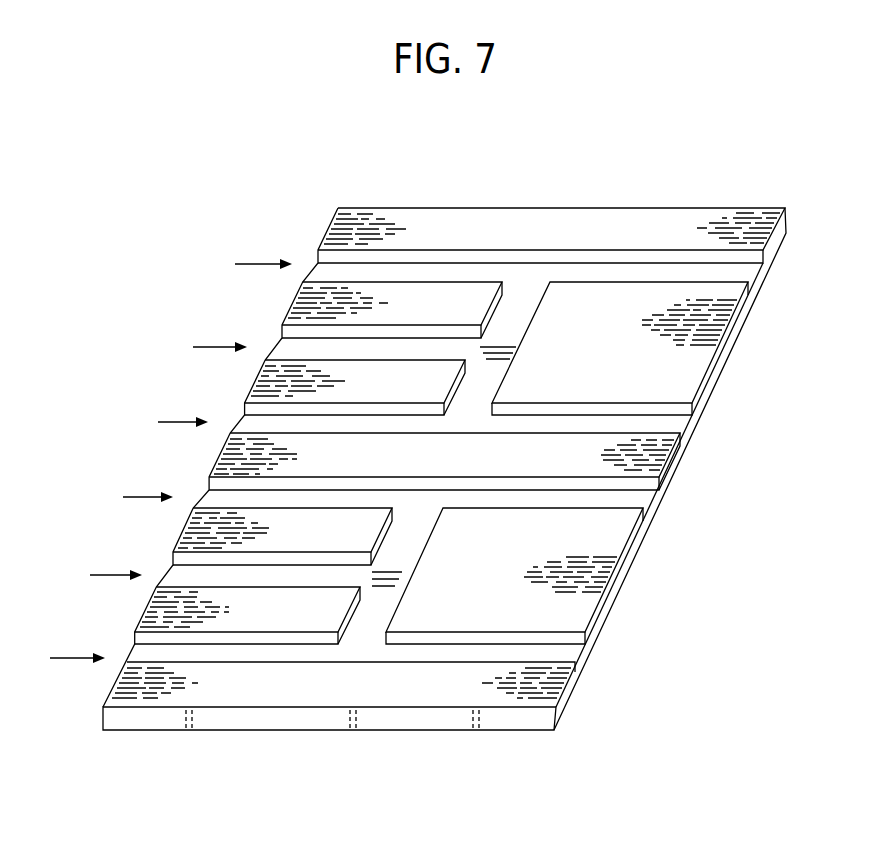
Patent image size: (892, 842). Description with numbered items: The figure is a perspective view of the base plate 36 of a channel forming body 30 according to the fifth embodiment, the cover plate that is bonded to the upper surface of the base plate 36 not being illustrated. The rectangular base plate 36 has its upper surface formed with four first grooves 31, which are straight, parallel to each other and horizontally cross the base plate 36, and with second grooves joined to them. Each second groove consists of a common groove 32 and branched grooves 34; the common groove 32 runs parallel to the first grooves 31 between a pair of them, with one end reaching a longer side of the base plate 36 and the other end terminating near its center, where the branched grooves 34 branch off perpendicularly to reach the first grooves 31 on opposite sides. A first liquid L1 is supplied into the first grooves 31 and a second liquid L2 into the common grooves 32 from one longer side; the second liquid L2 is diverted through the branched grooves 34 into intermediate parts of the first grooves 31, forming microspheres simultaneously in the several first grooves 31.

The channel forming body 30 is at (640, 190).
The first grooves 31 is at (378, 268).
The common groove 32 is at (313, 347).
The branched grooves 34 is at (466, 400).
The base plate 36 is at (332, 717).
The first liquid L1 is at (171, 448).
The second liquid L2 is at (168, 448).